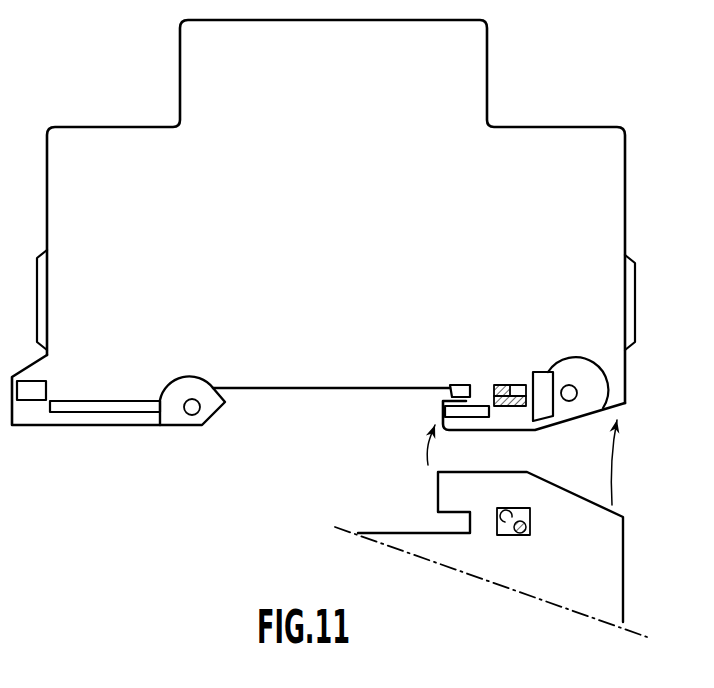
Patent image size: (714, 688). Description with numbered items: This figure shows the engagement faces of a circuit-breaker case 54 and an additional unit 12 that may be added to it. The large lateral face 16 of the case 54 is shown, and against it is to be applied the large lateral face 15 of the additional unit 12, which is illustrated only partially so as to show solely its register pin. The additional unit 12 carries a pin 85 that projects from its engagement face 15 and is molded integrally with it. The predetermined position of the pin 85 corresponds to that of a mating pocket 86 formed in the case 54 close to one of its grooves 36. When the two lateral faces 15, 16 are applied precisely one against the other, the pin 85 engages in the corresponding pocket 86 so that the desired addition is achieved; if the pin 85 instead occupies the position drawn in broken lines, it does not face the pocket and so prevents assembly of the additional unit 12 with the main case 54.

The additional unit 12 is at (635, 552).
The large lateral face of the additional unit 15 is at (453, 550).
The large lateral face of the circuit-breaker case 16 is at (321, 360).
The groove 36 is at (84, 403).
The circuit-breaker case 54 is at (286, 395).
The pin 85 is at (523, 535).
The pocket 86 is at (516, 384).